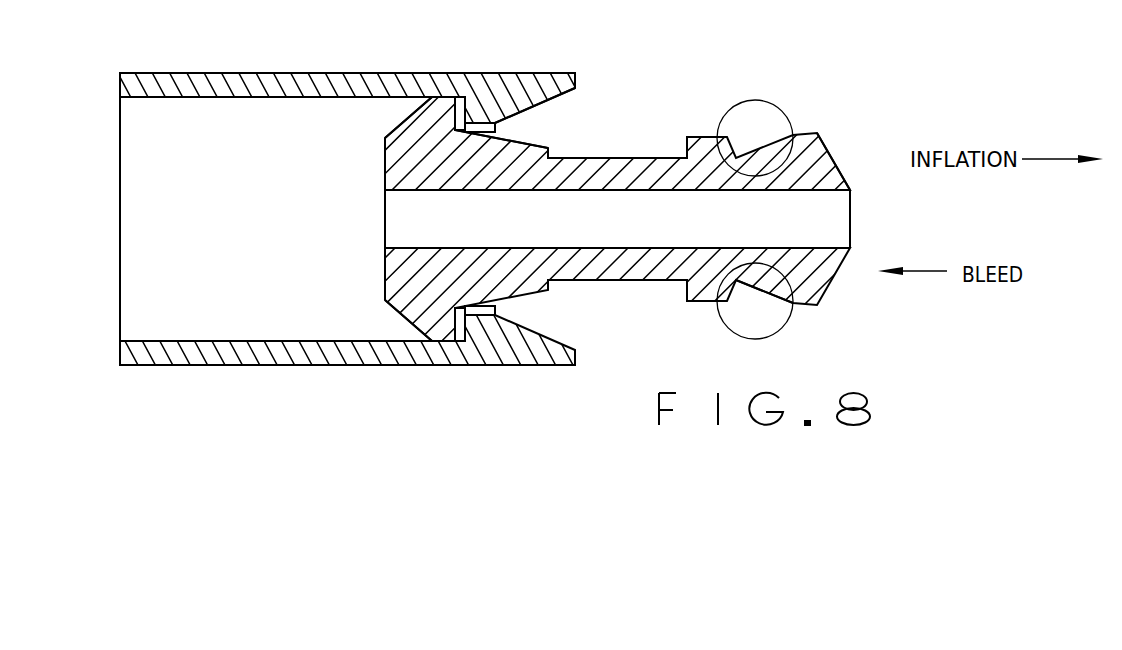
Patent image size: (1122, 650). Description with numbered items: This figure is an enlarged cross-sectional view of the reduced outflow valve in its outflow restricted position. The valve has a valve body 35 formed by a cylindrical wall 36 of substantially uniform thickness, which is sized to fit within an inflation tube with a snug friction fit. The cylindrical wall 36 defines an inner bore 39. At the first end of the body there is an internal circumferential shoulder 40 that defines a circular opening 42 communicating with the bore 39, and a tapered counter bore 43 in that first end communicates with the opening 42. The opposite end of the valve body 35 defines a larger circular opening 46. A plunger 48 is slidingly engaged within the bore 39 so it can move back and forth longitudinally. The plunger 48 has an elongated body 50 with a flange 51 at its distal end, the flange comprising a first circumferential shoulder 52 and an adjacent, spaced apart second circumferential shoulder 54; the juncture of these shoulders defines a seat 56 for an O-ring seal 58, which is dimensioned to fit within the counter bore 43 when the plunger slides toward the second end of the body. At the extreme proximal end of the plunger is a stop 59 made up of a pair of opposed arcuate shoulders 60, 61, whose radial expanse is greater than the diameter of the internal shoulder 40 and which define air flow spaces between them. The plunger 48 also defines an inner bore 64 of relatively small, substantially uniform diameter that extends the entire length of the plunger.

The valve body 35 is at (272, 70).
The cylindrical wall 36 is at (328, 86).
The inner bore 39 is at (220, 287).
The internal circumferential shoulder 40 is at (470, 123).
The circular opening 42 is at (495, 132).
The tapered counter bore 43 is at (556, 112).
The circular opening 46 is at (118, 222).
The plunger 48 is at (826, 109).
The elongated body 50 is at (605, 281).
The flange 51 is at (760, 303).
The first circumferential shoulder 52 is at (837, 160).
The second circumferential shoulder 54 is at (698, 157).
The seat 56 is at (737, 158).
The O-ring seal 58 is at (773, 308).
The stop 59 is at (397, 328).
The arcuate shoulder 60 is at (438, 115).
The arcuate shoulder 61 is at (443, 323).
The inner bore 64 is at (822, 220).